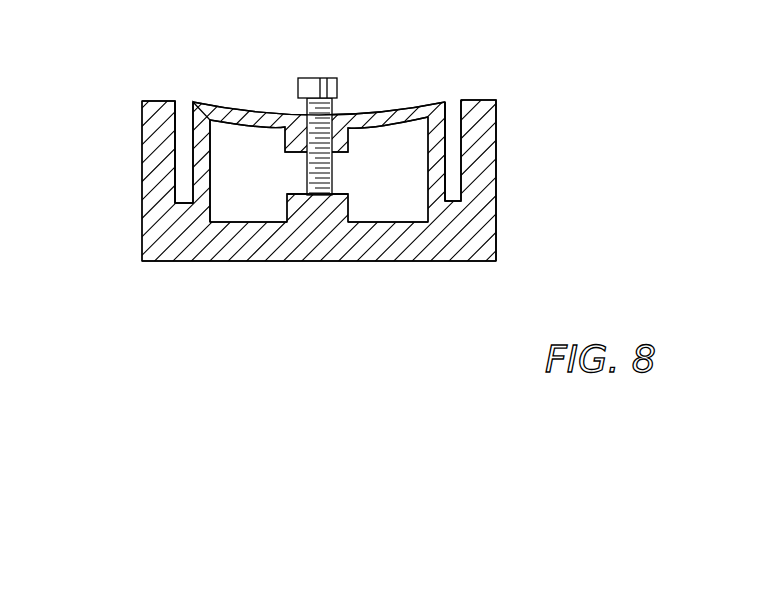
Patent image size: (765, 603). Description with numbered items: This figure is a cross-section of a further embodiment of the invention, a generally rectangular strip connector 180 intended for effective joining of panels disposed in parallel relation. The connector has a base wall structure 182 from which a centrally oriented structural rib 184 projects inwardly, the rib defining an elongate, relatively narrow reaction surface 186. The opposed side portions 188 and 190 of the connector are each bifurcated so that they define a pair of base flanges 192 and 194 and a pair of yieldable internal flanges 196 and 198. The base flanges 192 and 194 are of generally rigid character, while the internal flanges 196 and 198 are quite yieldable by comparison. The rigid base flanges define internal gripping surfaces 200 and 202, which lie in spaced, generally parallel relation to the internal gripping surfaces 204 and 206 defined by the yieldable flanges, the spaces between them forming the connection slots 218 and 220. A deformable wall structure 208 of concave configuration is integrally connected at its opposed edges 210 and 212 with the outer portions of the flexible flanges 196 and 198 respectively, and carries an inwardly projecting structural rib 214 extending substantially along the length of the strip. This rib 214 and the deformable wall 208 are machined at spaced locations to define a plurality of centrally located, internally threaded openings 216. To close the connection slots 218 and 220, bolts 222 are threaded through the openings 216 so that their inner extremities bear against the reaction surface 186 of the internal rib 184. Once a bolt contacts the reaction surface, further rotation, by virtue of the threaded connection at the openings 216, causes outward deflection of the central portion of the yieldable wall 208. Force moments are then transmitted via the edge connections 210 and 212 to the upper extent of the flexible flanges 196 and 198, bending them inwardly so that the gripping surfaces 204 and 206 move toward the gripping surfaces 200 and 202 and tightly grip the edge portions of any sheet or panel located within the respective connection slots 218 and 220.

The strip connector 180 is at (513, 63).
The base wall structure 182 is at (280, 242).
The structural rib 184 is at (317, 210).
The reaction surface 186 is at (343, 193).
The side portion 188 is at (167, 238).
The side portion 190 is at (477, 237).
The base flange 192 is at (158, 137).
The base flange 194 is at (485, 153).
The yieldable internal flange 196 is at (200, 187).
The yieldable internal flange 198 is at (465, 187).
The internal gripping surface 200 is at (182, 120).
The internal gripping surface 202 is at (460, 110).
The internal gripping surface 204 is at (178, 168).
The internal gripping surface 206 is at (494, 139).
The deformable wall structure 208 is at (268, 122).
The edge 210 is at (208, 117).
The edge 212 is at (430, 108).
The structural rib 214 is at (347, 142).
The threaded opening 216 is at (316, 112).
The connection slot 218 is at (185, 120).
The connection slot 220 is at (452, 125).
The bolt 222 is at (307, 167).